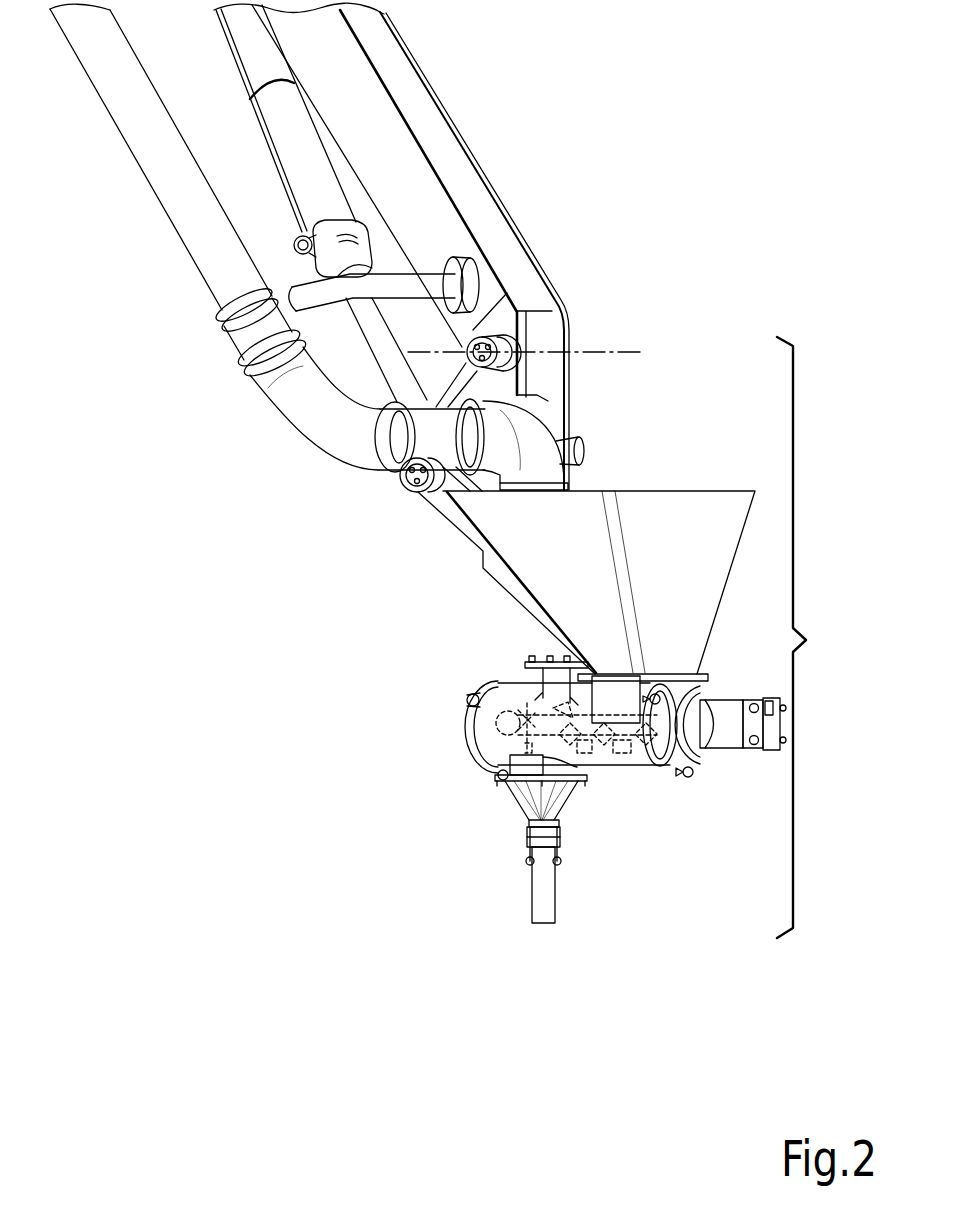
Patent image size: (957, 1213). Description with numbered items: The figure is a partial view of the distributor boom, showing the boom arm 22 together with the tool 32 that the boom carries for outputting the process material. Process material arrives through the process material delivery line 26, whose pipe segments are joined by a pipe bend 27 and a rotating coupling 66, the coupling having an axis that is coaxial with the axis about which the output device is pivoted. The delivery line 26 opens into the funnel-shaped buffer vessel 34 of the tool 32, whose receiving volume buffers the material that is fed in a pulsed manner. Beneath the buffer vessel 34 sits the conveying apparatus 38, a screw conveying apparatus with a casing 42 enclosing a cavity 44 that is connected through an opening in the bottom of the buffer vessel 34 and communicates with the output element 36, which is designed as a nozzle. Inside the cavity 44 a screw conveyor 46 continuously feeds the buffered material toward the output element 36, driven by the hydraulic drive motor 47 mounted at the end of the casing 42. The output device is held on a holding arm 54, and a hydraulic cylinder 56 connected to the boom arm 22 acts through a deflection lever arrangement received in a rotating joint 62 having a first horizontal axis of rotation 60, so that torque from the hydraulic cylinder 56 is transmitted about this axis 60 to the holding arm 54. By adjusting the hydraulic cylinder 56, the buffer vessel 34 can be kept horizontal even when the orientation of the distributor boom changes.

The boom arm 22 is at (458, 178).
The process material delivery line 26 is at (165, 181).
The pipe bend 27 is at (323, 453).
The tool 32 is at (811, 637).
The buffer vessel 34 is at (705, 559).
The output element 36 is at (557, 898).
The conveying apparatus 38 is at (650, 767).
The casing 42 is at (472, 733).
The cavity 44 is at (604, 757).
The screw conveyor 46 is at (490, 742).
The hydraulic drive motor 47 is at (740, 706).
The holding arm 54 is at (548, 413).
The hydraulic cylinder 56 is at (300, 154).
The first horizontal axis of rotation 60 is at (620, 352).
The rotating joint 62 is at (571, 352).
The rotating coupling 66 is at (397, 478).